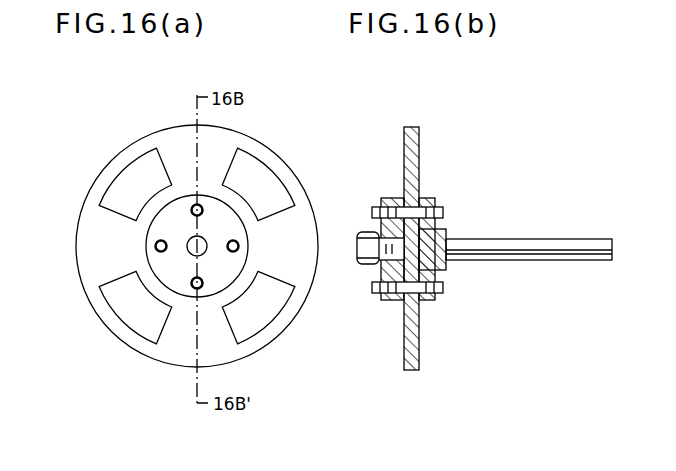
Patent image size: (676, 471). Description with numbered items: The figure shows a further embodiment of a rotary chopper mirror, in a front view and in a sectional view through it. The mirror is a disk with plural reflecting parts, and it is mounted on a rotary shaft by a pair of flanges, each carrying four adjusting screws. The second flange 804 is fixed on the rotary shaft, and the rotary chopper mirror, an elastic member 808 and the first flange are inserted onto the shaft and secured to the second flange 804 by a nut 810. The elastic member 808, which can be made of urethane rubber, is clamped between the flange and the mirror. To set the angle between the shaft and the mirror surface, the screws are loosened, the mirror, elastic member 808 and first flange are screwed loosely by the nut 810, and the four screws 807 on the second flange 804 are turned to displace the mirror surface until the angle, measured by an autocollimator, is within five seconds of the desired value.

The second flange 804 is at (438, 268).
The adjusting screws 807 is at (442, 208).
The elastic member 808 is at (402, 298).
The nut 810 is at (370, 234).